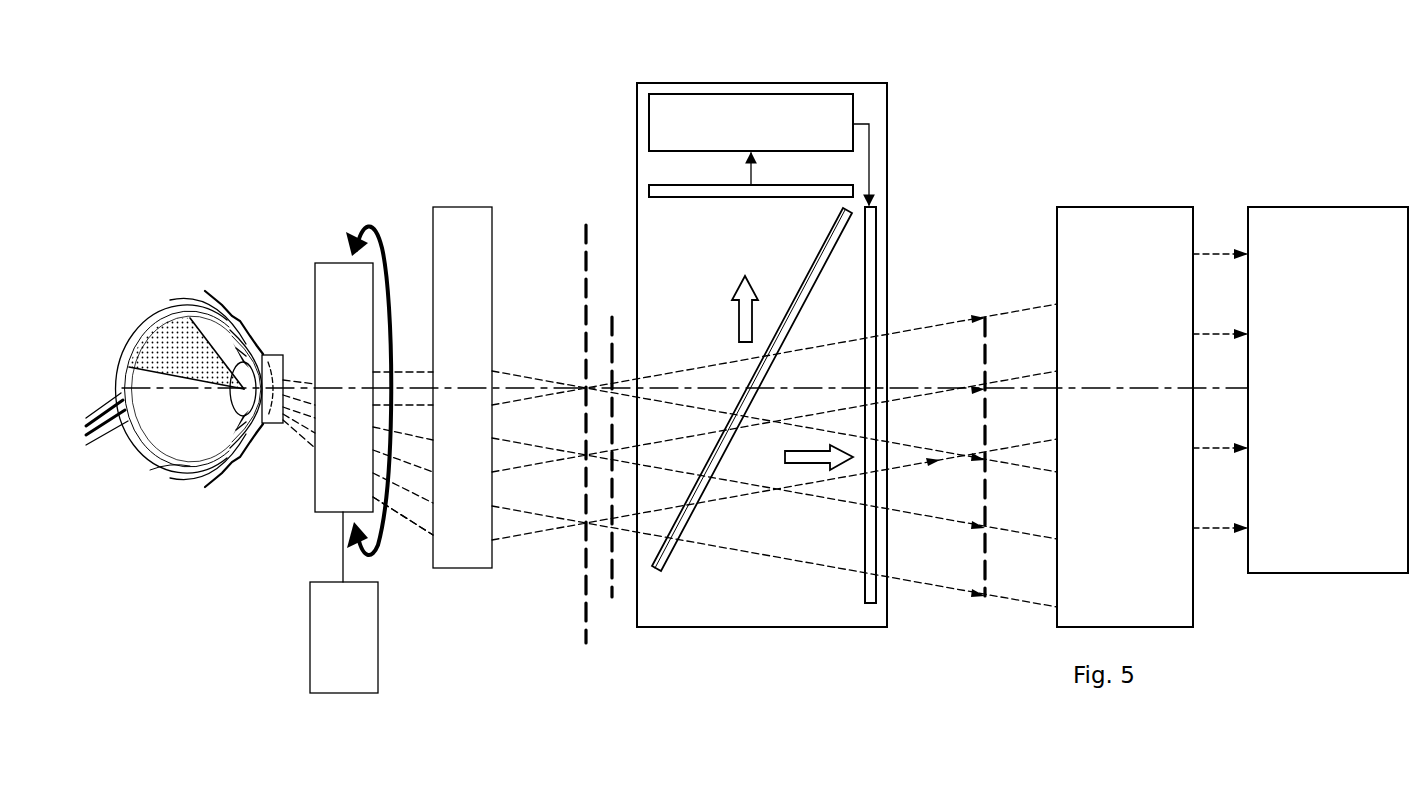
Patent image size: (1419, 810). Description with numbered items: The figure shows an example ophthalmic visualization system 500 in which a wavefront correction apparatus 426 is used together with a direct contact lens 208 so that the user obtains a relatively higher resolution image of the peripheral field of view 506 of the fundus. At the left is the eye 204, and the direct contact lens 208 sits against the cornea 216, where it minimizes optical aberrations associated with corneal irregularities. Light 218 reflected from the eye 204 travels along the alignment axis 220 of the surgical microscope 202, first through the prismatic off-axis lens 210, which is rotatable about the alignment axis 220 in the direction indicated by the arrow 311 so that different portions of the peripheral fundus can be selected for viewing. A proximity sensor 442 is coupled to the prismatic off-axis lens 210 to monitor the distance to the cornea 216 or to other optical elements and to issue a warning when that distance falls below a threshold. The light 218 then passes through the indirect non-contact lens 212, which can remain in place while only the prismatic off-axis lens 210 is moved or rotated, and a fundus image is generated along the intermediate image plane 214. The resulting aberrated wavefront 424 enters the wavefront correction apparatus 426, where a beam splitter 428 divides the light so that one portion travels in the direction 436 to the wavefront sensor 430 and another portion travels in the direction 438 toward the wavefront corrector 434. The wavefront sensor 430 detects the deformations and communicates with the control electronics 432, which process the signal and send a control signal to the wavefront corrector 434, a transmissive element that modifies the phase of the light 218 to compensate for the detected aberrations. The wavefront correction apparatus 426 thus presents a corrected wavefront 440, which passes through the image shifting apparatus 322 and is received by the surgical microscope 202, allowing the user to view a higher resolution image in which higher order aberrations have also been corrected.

The ophthalmic visualization system 500 is at (322, 102).
The peripheral field of view 506 is at (162, 335).
The eye 204 is at (150, 470).
The direct contact lens 208 is at (272, 428).
The cornea 216 is at (268, 355).
The prismatic off-axis lens 210 is at (313, 497).
The arrow 311 is at (360, 220).
The proximity sensor 442 is at (344, 602).
The indirect non-contact lens 212 is at (463, 207).
The light 218 is at (417, 527).
The intermediate image plane 214 is at (586, 228).
The alignment axis 220 is at (527, 388).
The aberrated wavefront 424 is at (609, 595).
The wavefront correction apparatus 426 is at (760, 82).
The control electronics 432 is at (751, 122).
The wavefront sensor 430 is at (716, 198).
The direction 436 is at (738, 283).
The beam splitter 428 is at (655, 572).
The direction 438 is at (804, 470).
The wavefront corrector 434 is at (866, 603).
The corrected wavefront 440 is at (985, 560).
The image shifting apparatus 322 is at (1125, 417).
The surgical microscope 202 is at (1300, 390).